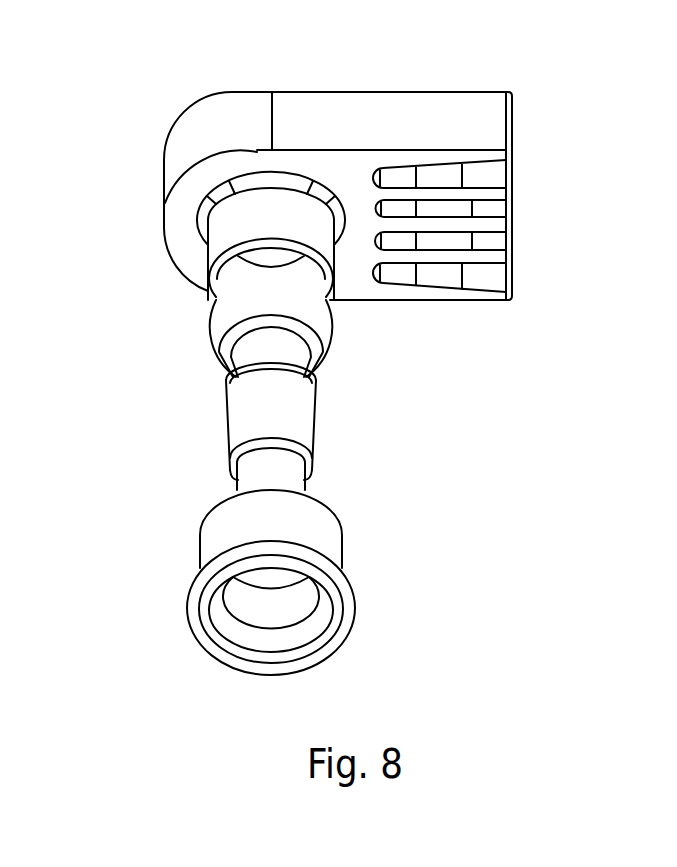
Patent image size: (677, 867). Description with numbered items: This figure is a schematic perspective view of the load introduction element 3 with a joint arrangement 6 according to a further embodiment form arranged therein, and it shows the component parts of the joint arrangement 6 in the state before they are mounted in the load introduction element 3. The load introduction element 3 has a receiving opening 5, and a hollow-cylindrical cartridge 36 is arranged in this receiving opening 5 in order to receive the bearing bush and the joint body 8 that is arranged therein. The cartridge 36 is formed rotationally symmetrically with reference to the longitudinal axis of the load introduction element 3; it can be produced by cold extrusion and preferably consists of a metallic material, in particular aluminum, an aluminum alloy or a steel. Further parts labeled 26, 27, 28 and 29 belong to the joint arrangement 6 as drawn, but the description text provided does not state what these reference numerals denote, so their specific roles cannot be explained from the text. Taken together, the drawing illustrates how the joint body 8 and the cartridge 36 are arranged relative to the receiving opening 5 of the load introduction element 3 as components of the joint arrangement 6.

The load introduction element 3 is at (513, 112).
The receiving opening 5 is at (263, 183).
The joint arrangement 6 is at (340, 450).
The joint body 8 is at (513, 186).
The bearing ring 26 is at (240, 217).
The shaft 27 is at (225, 437).
The ball joint 28 is at (212, 310).
The tube section 29 is at (308, 410).
The cartridge 36 is at (210, 535).